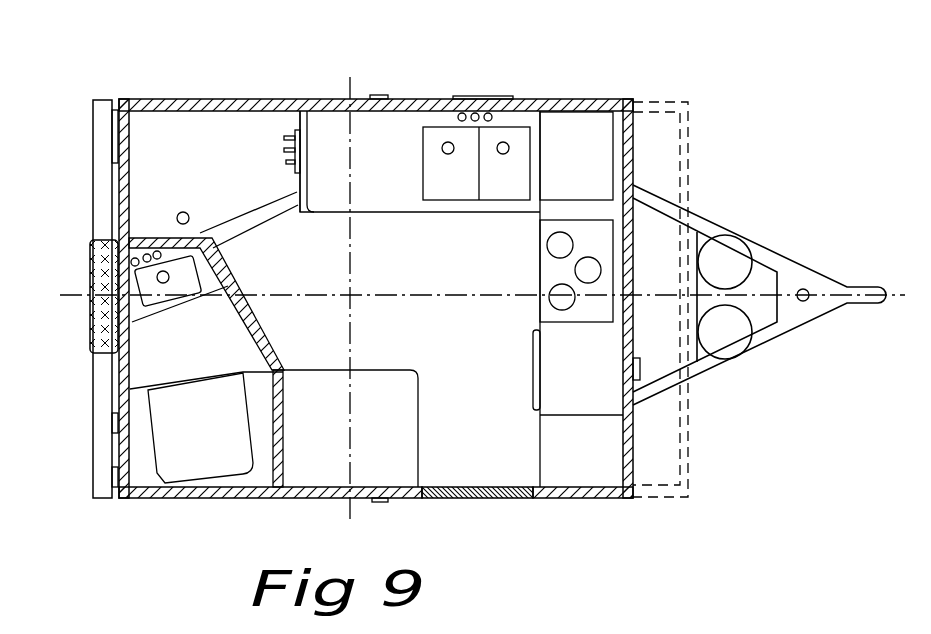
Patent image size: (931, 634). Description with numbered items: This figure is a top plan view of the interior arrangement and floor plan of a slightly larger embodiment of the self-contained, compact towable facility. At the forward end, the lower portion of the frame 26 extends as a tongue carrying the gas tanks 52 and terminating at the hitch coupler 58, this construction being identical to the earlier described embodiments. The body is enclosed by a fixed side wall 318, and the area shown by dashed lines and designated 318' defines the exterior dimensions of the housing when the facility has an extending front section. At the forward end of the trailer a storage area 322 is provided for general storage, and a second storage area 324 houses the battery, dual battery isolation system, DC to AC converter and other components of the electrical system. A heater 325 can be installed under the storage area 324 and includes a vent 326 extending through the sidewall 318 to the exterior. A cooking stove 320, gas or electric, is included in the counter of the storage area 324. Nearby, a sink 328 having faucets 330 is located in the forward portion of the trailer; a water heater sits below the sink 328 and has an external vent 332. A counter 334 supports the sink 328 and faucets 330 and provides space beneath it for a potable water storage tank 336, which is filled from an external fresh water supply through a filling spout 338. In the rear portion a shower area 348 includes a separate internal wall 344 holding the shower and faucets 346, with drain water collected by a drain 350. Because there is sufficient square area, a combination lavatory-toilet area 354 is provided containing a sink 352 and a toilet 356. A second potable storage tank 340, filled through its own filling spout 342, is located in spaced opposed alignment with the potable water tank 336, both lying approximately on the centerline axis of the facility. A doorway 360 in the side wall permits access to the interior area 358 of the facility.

The frame 26 is at (775, 262).
The gas tanks 52 is at (725, 240).
The hitch coupler 58 is at (808, 300).
The fixed side wall 318 is at (382, 259).
The extended housing outline 318' is at (688, 261).
The cooking stove 320 is at (600, 238).
The storage area 322 is at (570, 123).
The second storage area 324 is at (593, 468).
The heater 325 is at (533, 375).
The vent 326 is at (640, 375).
The sink 328 is at (510, 132).
The faucets 330 is at (488, 118).
The external vent 332 is at (457, 105).
The counter 334 is at (403, 127).
The potable water storage tank 336 is at (383, 188).
The filling spout 338 is at (380, 98).
The second potable storage tank 340 is at (382, 398).
The filling spout 342 is at (377, 503).
The internal wall 344 is at (300, 111).
The shower and faucets 346 is at (288, 137).
The shower area 348 is at (247, 201).
The drain 350 is at (181, 212).
The sink 352 is at (142, 275).
The lavatory-toilet area 354 is at (180, 318).
The toilet 356 is at (163, 478).
The interior area 358 is at (457, 321).
The doorway 360 is at (478, 500).